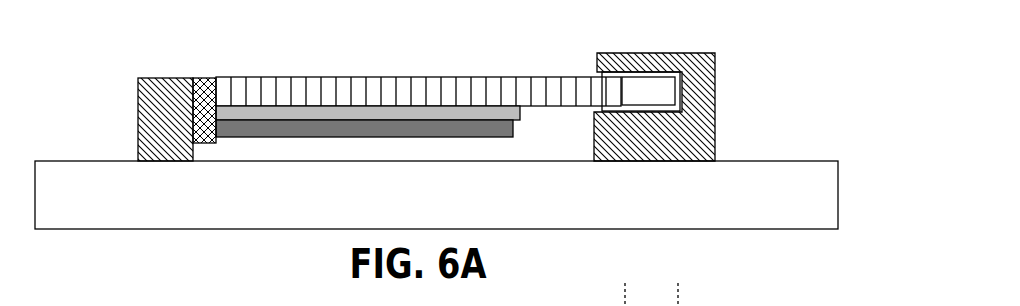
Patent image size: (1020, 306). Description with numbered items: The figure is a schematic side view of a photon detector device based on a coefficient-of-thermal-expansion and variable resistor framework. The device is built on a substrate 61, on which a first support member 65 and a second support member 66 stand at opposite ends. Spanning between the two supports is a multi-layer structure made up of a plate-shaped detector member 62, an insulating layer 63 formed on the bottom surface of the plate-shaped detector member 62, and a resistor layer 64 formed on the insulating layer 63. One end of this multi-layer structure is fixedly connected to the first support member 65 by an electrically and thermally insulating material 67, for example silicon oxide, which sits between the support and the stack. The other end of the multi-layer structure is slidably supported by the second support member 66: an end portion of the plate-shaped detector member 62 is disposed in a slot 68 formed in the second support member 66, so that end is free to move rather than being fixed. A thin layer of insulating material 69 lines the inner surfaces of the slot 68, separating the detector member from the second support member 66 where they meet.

The substrate 61 is at (98, 230).
The plate-shaped detector member 62 is at (390, 77).
The insulating layer 63 is at (312, 115).
The resistor layer 64 is at (313, 138).
The first support member 65 is at (150, 141).
The second support member 66 is at (698, 143).
The electrically and thermally insulating material 67 is at (200, 78).
The slot 68 is at (635, 88).
The thin layer of insulating material 69 is at (677, 95).